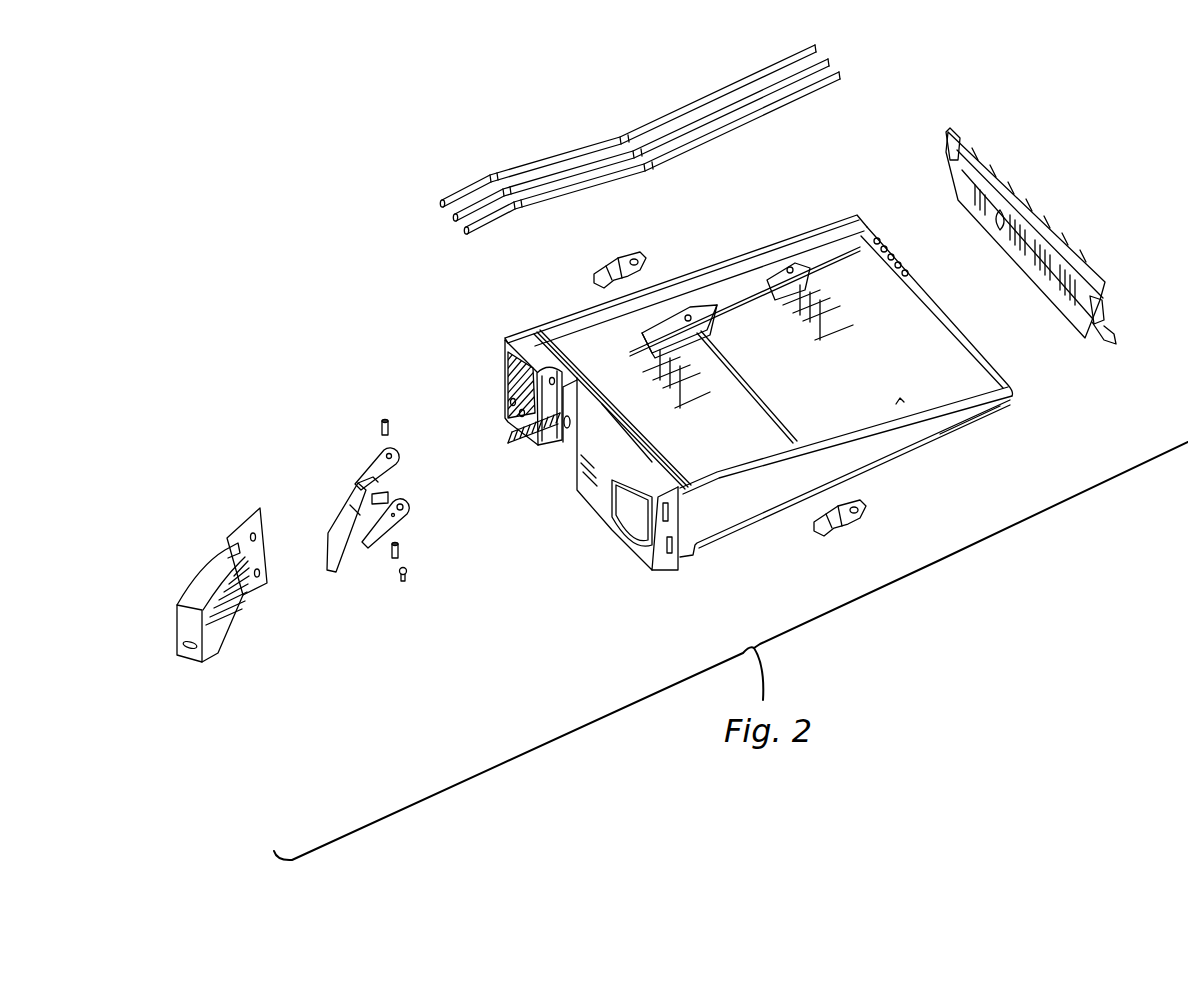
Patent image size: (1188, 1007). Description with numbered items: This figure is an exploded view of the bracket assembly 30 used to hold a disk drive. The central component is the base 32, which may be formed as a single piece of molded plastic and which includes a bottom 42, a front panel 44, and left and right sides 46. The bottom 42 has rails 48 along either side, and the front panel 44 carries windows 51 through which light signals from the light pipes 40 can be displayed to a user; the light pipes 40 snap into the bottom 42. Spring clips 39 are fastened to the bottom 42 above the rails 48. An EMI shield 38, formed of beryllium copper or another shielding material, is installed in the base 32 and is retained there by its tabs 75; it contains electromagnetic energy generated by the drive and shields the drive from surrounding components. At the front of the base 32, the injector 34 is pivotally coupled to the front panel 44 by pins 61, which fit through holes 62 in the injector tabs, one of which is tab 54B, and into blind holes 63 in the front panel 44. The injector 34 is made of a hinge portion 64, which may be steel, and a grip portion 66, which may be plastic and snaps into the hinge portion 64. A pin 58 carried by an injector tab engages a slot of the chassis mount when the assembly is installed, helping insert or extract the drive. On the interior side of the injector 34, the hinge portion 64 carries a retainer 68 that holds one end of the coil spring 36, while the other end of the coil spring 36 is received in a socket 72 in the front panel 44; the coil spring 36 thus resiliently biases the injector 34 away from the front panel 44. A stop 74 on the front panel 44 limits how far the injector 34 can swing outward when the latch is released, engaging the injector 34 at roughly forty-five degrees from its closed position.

The bracket assembly 30 is at (734, 388).
The base 32 is at (946, 456).
The injector 34 is at (383, 521).
The coil spring 36 is at (507, 437).
The EMI shield 38 is at (1031, 228).
The spring clips 39 is at (610, 262).
The light pipes 40 is at (643, 130).
The bottom 42 is at (935, 326).
The front panel 44 is at (523, 338).
The left and right sides 46 is at (755, 243).
The rails 48 is at (880, 462).
The windows 51 is at (516, 402).
The cam lever 54B is at (378, 458).
The pin 58 is at (410, 578).
The pins 61 is at (375, 425).
The holes 62 is at (392, 445).
The blind holes 63 is at (553, 378).
The hinge portion 64 is at (355, 496).
The grip portion 66 is at (195, 597).
The retainer 68 is at (392, 495).
The socket 72 is at (567, 428).
The stop 74 is at (505, 383).
The tabs 75 is at (975, 140).